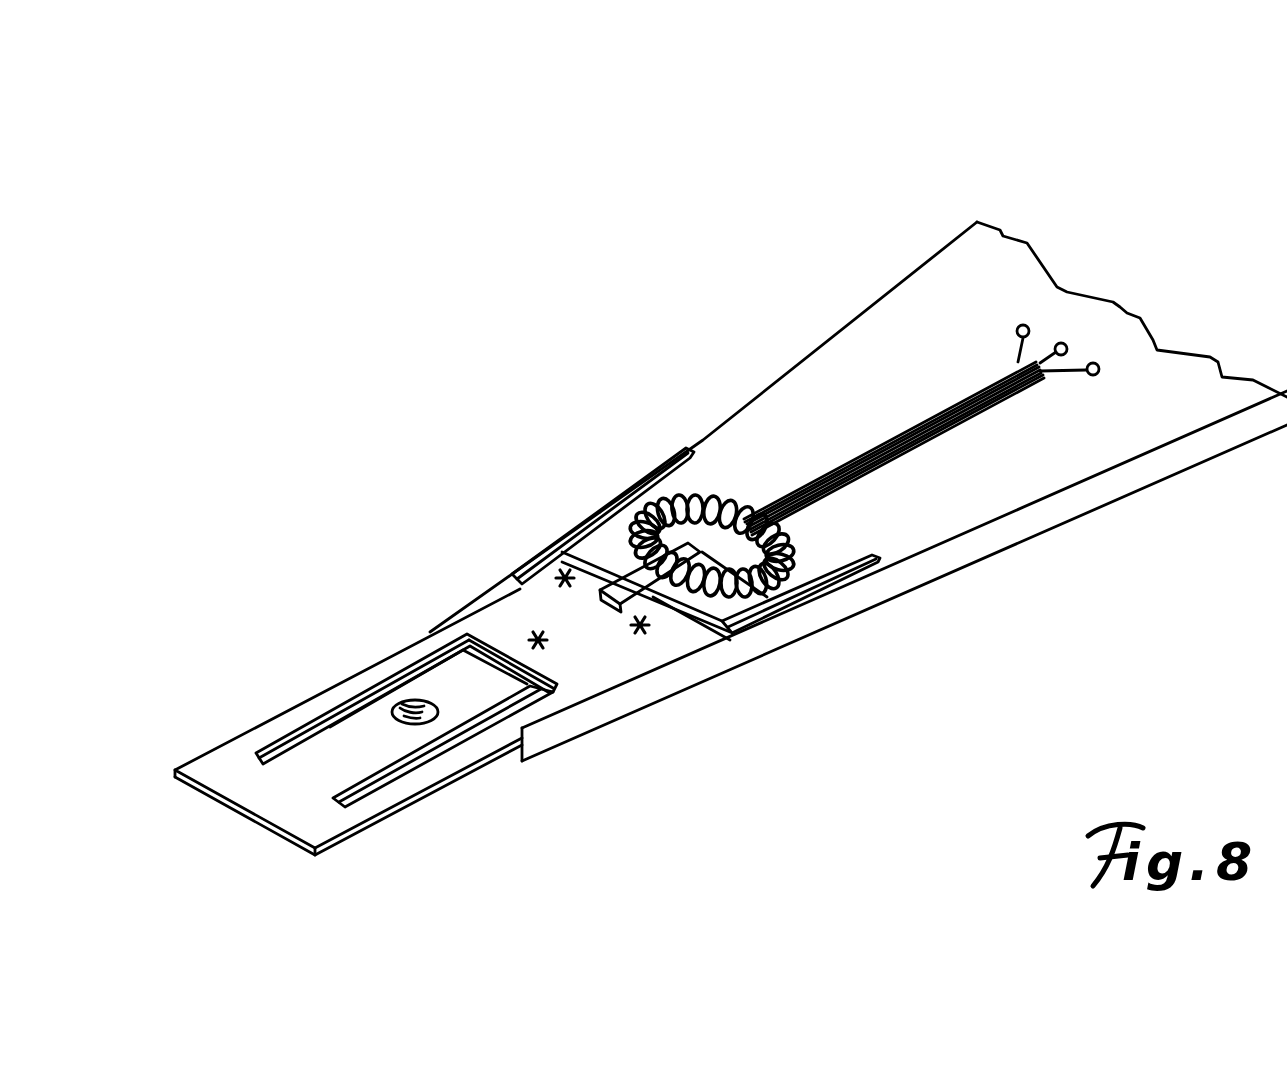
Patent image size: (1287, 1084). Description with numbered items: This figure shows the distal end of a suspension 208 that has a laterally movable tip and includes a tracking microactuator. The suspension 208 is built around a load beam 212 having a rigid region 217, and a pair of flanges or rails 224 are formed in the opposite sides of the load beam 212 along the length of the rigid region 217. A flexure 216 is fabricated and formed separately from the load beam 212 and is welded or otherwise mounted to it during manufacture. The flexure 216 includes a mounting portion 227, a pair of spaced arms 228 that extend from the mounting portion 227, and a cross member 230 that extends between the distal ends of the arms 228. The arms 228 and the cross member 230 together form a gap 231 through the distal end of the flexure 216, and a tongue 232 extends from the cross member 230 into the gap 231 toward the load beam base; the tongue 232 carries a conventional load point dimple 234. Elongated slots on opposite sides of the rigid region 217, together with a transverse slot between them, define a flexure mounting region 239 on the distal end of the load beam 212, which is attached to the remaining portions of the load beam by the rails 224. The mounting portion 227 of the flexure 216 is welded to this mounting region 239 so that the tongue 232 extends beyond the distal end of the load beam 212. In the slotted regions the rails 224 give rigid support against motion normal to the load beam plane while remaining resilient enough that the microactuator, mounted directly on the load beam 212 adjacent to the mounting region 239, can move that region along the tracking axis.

The suspension 208 is at (918, 228).
The load beam 212 is at (905, 330).
The rigid region 217 is at (1040, 460).
The rails 224 is at (920, 570).
The flexure 216 is at (463, 594).
The cross member 230 is at (250, 790).
The spaced arms 228 is at (345, 672).
The tongue 232 is at (455, 672).
The gap 231 is at (373, 772).
The load point dimple 234 is at (437, 715).
The mounting portion 227 is at (540, 593).
The flexure mounting region 239 is at (718, 638).